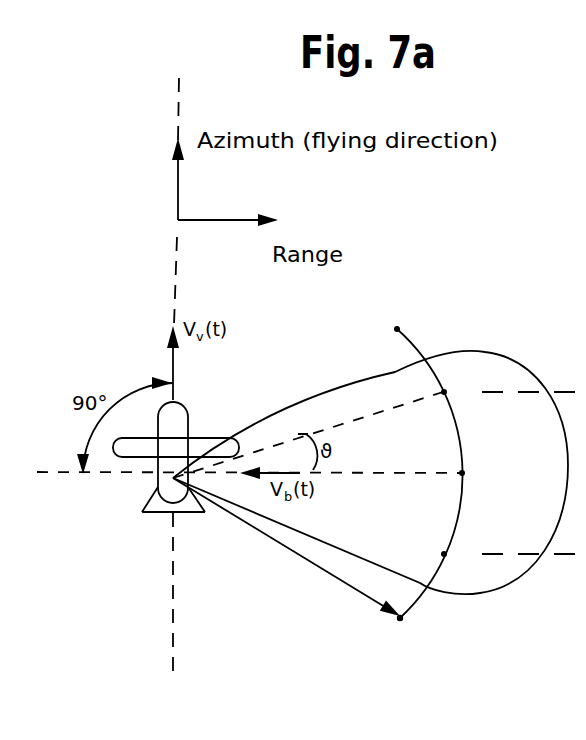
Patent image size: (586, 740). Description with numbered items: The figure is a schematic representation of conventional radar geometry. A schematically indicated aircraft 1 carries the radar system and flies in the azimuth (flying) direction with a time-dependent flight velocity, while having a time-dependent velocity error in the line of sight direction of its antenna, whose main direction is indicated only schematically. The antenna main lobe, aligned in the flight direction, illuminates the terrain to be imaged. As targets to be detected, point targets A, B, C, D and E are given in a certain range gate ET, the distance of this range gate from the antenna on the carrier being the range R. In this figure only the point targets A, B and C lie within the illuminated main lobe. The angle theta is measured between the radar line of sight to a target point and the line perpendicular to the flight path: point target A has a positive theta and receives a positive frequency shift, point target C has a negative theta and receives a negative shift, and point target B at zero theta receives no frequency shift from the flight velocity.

The aircraft 1 is at (132, 448).
The point target A is at (455, 391).
The point target B is at (473, 475).
The point target C is at (456, 556).
The point target D is at (428, 468).
The point target E is at (411, 621).
The range R is at (286, 547).
The range gate ET is at (393, 629).